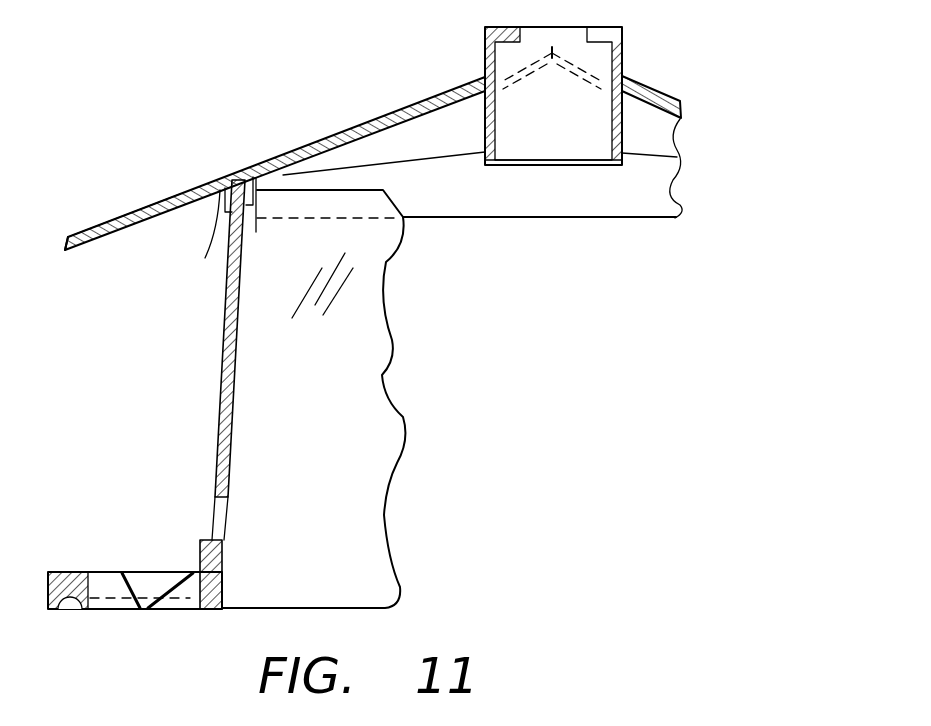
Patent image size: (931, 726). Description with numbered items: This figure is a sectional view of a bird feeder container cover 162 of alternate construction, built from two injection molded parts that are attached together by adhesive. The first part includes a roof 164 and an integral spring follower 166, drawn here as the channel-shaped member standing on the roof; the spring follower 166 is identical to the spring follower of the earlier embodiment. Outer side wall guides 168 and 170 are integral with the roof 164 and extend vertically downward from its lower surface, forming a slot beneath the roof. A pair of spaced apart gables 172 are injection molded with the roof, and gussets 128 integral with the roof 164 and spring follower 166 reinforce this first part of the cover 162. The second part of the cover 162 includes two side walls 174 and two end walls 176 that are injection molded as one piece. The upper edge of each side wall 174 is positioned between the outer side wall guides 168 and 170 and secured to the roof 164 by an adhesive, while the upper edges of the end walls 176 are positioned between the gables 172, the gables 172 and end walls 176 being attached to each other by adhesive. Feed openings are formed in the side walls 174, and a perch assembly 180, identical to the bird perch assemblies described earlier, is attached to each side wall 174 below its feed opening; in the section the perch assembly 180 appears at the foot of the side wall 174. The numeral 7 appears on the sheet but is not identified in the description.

The panel 7 is at (730, 235).
The gussets 128 is at (362, 151).
The bird feed container cover 162 is at (350, 95).
The roof 164 is at (178, 203).
The spring follower 166 is at (628, 73).
The outer side wall guide 168 is at (222, 218).
The outer side wall guide 170 is at (236, 250).
The gables 172 is at (654, 196).
The side walls 174 is at (223, 362).
The end walls 176 is at (357, 419).
The perch assembly 180 is at (107, 587).